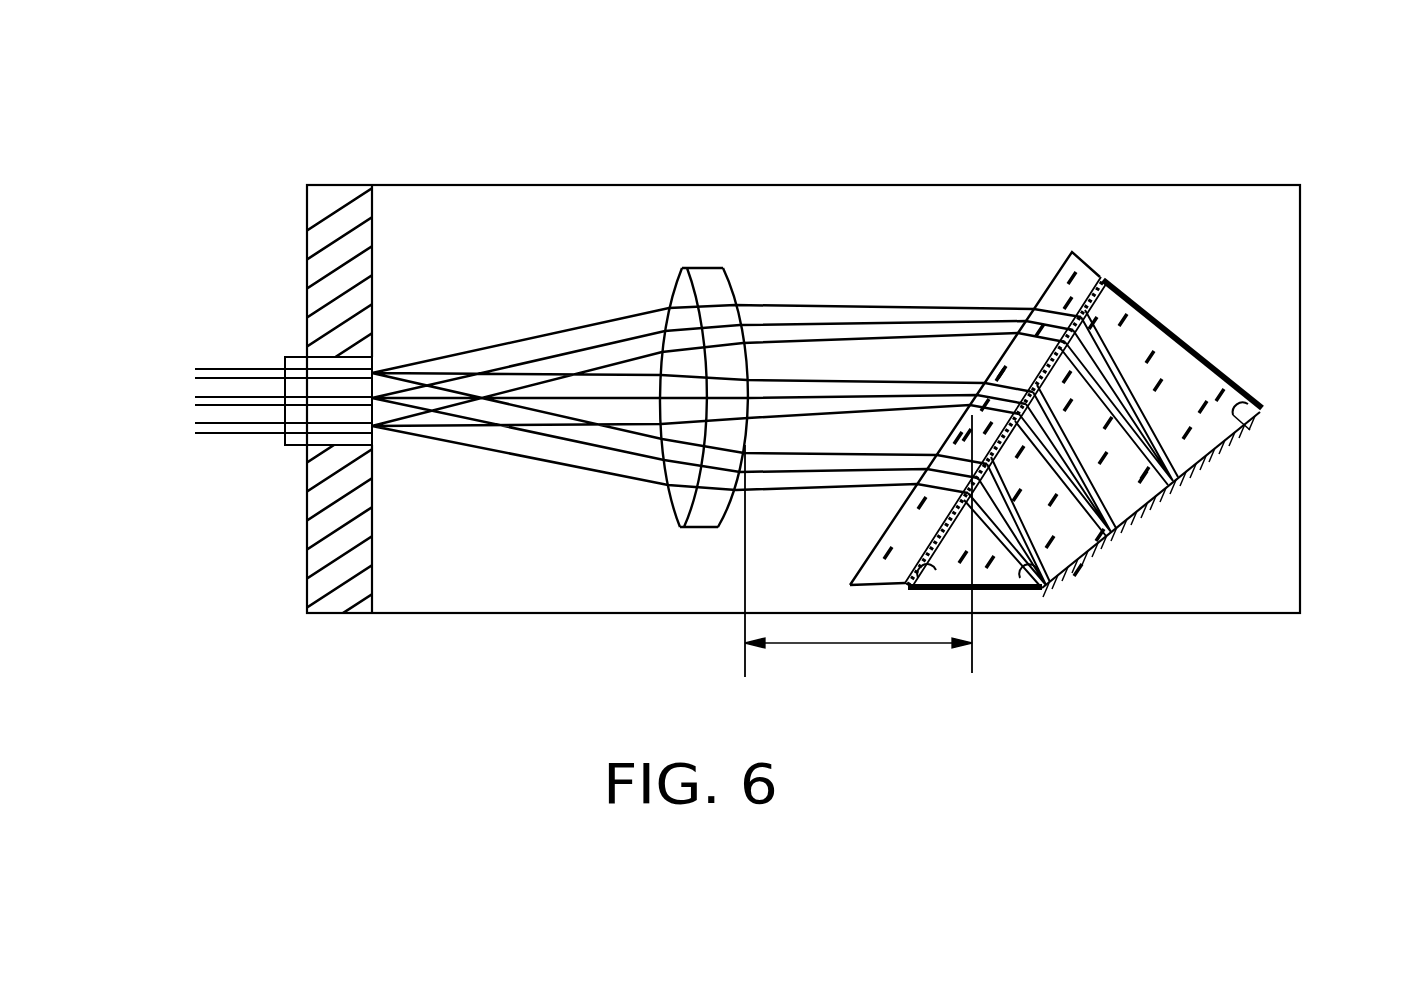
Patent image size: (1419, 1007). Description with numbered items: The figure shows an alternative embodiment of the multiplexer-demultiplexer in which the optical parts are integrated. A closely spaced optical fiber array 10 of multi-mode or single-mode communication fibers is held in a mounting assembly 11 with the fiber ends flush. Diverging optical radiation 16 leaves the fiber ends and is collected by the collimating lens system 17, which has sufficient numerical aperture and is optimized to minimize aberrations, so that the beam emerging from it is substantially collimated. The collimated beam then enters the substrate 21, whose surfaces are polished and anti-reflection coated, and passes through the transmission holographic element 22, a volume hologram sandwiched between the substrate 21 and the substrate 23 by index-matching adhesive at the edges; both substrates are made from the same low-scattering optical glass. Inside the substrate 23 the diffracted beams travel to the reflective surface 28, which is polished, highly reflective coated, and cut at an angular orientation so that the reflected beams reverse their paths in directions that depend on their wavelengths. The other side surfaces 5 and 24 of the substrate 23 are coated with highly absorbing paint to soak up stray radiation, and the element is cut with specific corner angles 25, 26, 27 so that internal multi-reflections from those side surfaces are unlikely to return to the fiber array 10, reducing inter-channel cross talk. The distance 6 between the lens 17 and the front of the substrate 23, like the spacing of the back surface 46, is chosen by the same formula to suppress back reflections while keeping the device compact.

The side surface 5 is at (992, 592).
The distance 6 is at (822, 645).
The optical fiber array 10 is at (222, 367).
The mounting assembly 11 is at (290, 352).
The optical radiation 16 is at (522, 338).
The collimating lens system 17 is at (707, 258).
The substrate 21 is at (1087, 260).
The transmission holographic element 22 is at (1107, 277).
The substrate 23 is at (1120, 405).
The side surface 24 is at (1177, 318).
The corner angle 25 is at (1252, 428).
The corner angle 26 is at (928, 590).
The corner angle 27 is at (1037, 592).
The reflective surface 28 is at (1165, 510).
The back surface 46 is at (925, 578).